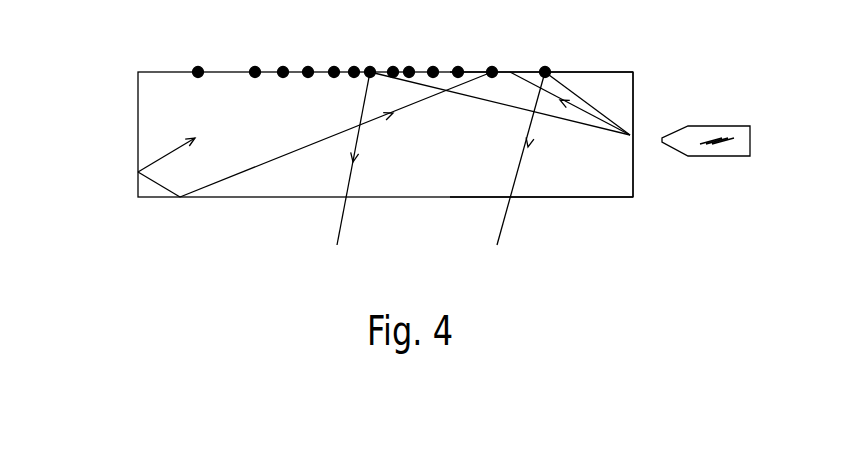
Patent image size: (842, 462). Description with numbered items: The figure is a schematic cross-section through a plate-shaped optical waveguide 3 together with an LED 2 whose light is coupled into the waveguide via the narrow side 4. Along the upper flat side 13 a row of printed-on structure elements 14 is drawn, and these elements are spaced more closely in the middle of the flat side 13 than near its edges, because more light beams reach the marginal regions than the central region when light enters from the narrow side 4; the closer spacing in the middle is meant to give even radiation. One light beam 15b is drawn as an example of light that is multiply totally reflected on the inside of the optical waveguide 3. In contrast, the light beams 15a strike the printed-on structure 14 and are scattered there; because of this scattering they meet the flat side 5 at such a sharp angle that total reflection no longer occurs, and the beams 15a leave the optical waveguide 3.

The LED 2 is at (730, 157).
The plate-shaped optical waveguide 3 is at (283, 178).
The narrow side 4 is at (634, 95).
The flat side 5 is at (604, 198).
The flat side 13 is at (600, 70).
The printed-on structure 14 is at (358, 69).
The light beams 15a is at (339, 236).
The light beam 15b is at (152, 160).